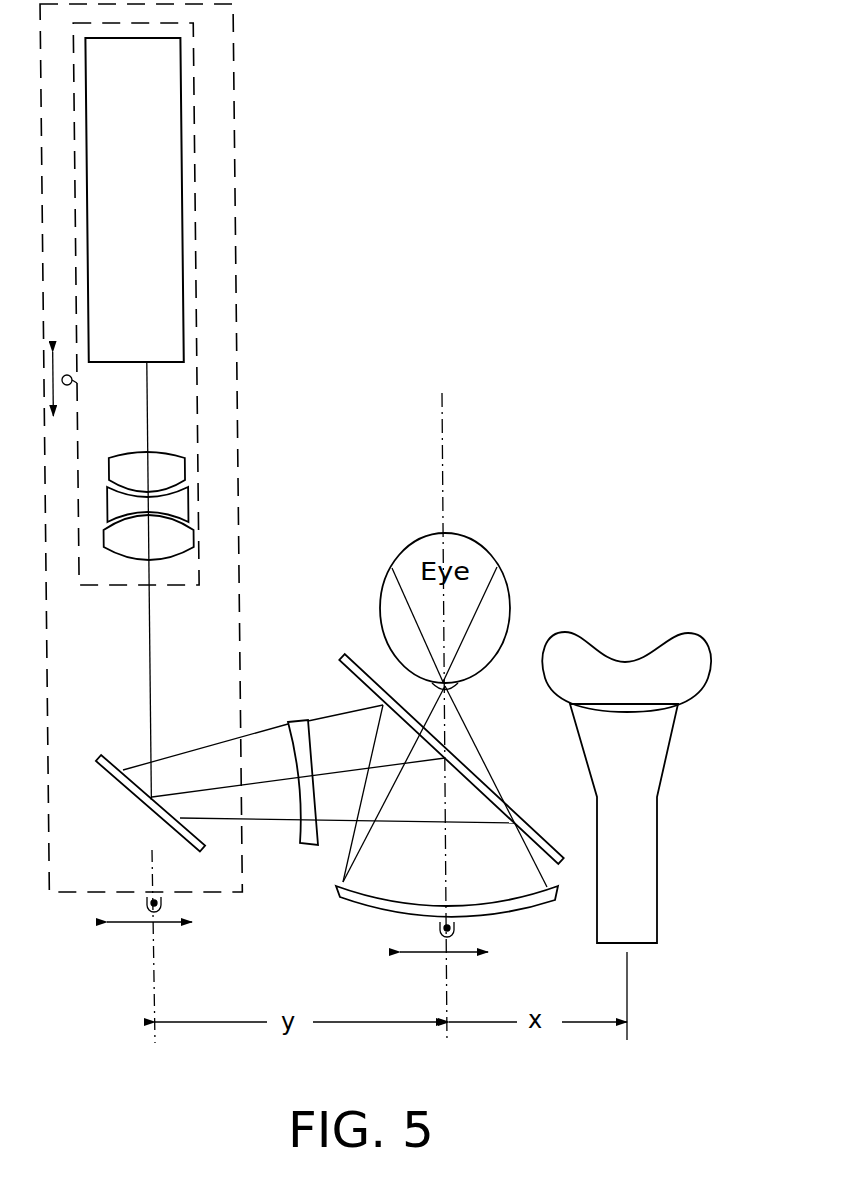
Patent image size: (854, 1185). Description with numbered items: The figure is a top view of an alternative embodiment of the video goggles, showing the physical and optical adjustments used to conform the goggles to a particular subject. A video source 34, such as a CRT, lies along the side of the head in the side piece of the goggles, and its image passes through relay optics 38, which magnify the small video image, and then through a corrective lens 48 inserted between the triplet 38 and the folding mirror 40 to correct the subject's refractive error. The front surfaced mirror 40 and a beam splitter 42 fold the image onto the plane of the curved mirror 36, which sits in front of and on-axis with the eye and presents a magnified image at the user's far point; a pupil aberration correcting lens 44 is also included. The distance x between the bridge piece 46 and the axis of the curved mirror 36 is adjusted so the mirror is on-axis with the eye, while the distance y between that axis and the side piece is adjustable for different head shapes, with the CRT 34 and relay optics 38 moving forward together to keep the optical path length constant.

The video source 34 is at (180, 228).
The curved mirror 36 is at (493, 915).
The relay optics 38 is at (207, 490).
The front surfaced mirror 40 is at (148, 813).
The beam splitter 42 is at (523, 822).
The pupil aberration correcting lens 44 is at (310, 847).
The bridge piece 46 is at (667, 765).
The corrective lens 48 is at (234, 610).